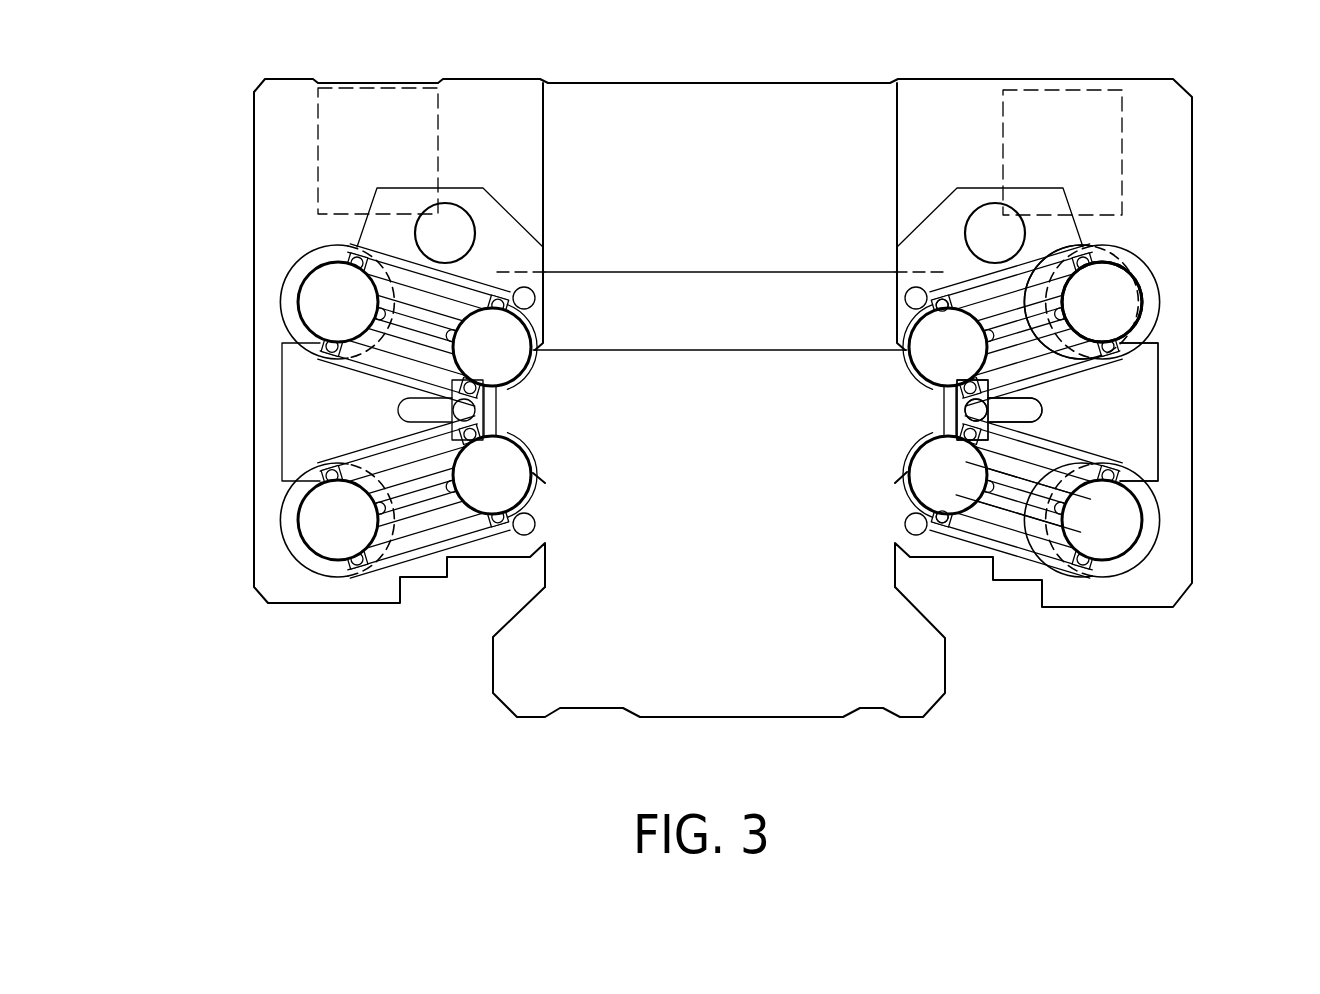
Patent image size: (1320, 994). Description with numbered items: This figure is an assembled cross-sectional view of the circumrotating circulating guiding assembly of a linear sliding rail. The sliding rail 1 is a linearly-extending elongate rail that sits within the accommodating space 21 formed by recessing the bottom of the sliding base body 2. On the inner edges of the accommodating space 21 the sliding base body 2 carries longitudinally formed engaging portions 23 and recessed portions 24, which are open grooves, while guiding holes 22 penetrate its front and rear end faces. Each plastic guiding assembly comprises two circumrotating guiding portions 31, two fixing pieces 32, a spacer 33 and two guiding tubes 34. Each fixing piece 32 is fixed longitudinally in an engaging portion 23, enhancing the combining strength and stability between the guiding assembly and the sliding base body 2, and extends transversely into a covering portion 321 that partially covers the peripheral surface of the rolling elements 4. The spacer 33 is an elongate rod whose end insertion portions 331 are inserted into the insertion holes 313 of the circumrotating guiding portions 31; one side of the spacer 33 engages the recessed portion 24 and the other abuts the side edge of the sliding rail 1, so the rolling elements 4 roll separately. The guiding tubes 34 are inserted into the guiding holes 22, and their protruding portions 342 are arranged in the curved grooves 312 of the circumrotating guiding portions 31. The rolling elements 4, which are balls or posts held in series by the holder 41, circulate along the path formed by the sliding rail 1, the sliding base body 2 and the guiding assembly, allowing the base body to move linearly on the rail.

The sliding rail 1 is at (492, 662).
The sliding base body 2 is at (272, 152).
The accommodating space 21 is at (672, 303).
The guiding holes 22 is at (1158, 330).
The engaging portion 23 is at (945, 285).
The recessed portion 24 is at (1078, 492).
The circumrotating guiding portion 31 is at (1024, 602).
The curved groove 312 is at (1030, 500).
The insertion hole 313 is at (1012, 510).
The fixing piece 32 is at (503, 278).
The covering portion 321 is at (895, 312).
The spacer 33 is at (972, 411).
The insertion portion 331 is at (1042, 408).
The guiding tube 34 is at (1158, 303).
The protruding portion 342 is at (1150, 362).
The rolling elements 4 is at (1108, 298).
The holder 41 is at (1075, 262).